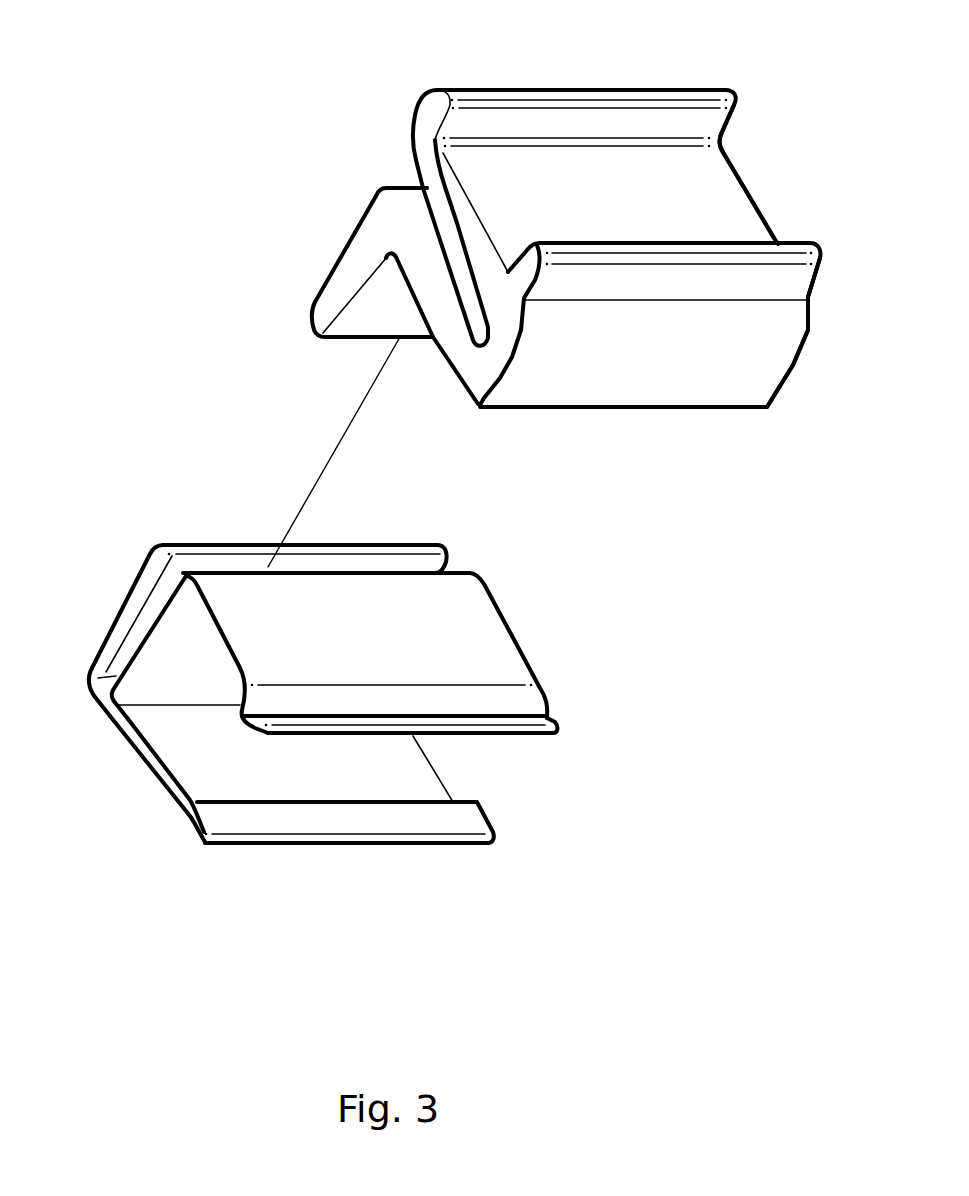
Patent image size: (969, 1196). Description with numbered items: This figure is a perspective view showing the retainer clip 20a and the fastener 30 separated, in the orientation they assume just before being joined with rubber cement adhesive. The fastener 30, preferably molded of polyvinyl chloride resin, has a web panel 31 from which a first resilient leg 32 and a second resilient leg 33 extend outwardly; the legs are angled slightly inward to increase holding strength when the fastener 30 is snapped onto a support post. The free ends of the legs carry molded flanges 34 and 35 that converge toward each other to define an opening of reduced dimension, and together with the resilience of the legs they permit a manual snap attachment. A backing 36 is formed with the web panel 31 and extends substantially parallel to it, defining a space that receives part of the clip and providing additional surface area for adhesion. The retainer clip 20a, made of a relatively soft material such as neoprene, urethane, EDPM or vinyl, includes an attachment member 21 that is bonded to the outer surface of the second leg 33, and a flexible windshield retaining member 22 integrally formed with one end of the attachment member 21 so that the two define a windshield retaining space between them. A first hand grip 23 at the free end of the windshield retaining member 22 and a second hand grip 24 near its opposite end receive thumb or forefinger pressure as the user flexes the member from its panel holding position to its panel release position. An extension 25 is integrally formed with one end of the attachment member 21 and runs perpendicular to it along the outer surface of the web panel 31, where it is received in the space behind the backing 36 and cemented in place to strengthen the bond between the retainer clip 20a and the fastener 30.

The retainer clip 20a is at (570, 204).
The attachment member 21 is at (422, 292).
The windshield retaining member 22 is at (731, 178).
The first hand grip 23 is at (622, 96).
The second hand grip 24 is at (777, 283).
The extension 25 is at (353, 255).
The fastener 30 is at (355, 725).
The web panel 31 is at (100, 693).
The first resilient leg 32 is at (131, 756).
The second resilient leg 33 is at (493, 633).
The molded flange 34 is at (192, 828).
The molded flange 35 is at (553, 727).
The backing 36 is at (107, 633).